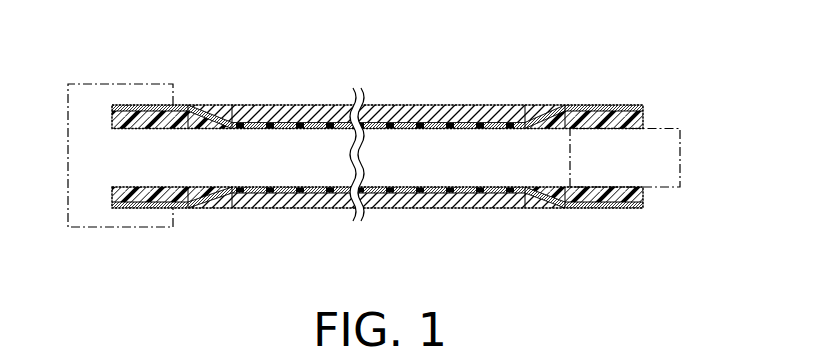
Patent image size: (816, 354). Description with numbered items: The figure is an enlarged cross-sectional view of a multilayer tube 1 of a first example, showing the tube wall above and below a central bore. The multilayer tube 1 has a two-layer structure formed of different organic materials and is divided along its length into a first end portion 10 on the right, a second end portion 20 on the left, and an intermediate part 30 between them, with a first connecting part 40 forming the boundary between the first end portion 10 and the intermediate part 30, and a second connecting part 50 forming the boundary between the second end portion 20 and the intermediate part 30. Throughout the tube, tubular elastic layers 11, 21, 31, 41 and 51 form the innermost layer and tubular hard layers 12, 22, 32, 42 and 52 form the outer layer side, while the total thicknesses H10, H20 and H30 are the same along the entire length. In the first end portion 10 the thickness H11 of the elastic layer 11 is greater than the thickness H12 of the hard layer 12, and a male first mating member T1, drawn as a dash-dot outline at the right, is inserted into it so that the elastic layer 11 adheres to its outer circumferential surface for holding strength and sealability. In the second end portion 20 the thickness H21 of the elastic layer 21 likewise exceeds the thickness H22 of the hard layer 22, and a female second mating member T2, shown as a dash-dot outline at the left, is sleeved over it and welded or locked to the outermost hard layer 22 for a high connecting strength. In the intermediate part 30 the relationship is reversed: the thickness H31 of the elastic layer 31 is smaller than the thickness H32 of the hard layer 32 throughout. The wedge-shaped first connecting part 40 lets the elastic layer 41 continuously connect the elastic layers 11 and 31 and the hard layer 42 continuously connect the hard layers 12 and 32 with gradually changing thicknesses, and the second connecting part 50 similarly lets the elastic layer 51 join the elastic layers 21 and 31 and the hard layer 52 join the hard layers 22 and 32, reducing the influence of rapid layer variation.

The multilayer tube 1 is at (645, 45).
The first end portion 10 is at (625, 163).
The elastic layer 11 is at (643, 123).
The hard layer 12 is at (627, 108).
The second end portion 20 is at (126, 159).
The elastic layer 21 is at (115, 125).
The hard layer 22 is at (132, 108).
The intermediate part 30 is at (378, 166).
The elastic layer 31 is at (440, 125).
The hard layer 32 is at (398, 110).
The first connecting part 40 is at (547, 166).
The elastic layer 41 is at (551, 118).
The hard layer 42 is at (545, 118).
The second connecting part 50 is at (208, 161).
The elastic layer 51 is at (204, 114).
The hard layer 52 is at (209, 118).
The total thickness H10 is at (627, 143).
The thickness of elastic layer H11 is at (595, 88).
The thickness of hard layer H12 is at (607, 143).
The total thickness H20 is at (167, 143).
The thickness of elastic layer H21 is at (135, 88).
The thickness of hard layer H22 is at (145, 143).
The total thickness H30 is at (333, 143).
The thickness of elastic layer H31 is at (302, 88).
The thickness of hard layer H32 is at (313, 143).
The first mating member T1 is at (665, 192).
The second mating member T2 is at (92, 228).